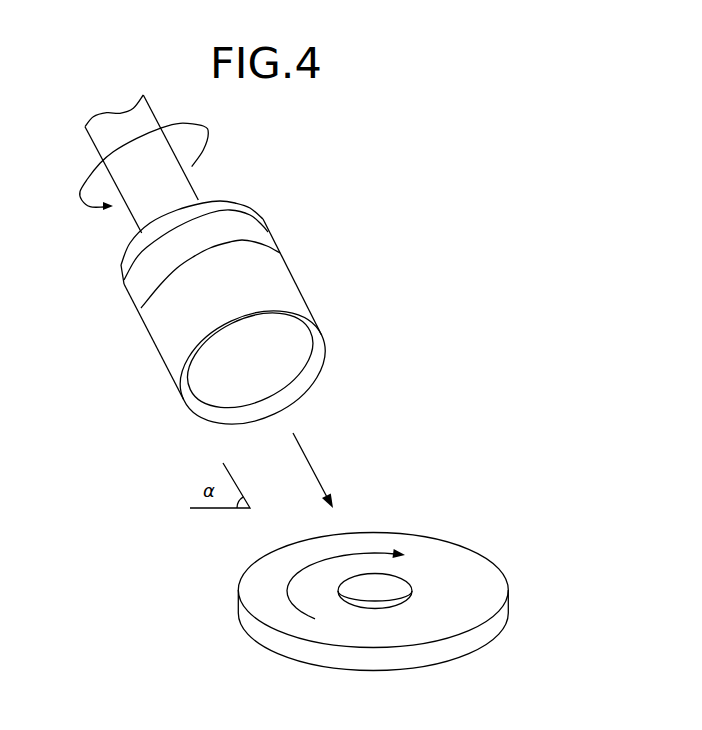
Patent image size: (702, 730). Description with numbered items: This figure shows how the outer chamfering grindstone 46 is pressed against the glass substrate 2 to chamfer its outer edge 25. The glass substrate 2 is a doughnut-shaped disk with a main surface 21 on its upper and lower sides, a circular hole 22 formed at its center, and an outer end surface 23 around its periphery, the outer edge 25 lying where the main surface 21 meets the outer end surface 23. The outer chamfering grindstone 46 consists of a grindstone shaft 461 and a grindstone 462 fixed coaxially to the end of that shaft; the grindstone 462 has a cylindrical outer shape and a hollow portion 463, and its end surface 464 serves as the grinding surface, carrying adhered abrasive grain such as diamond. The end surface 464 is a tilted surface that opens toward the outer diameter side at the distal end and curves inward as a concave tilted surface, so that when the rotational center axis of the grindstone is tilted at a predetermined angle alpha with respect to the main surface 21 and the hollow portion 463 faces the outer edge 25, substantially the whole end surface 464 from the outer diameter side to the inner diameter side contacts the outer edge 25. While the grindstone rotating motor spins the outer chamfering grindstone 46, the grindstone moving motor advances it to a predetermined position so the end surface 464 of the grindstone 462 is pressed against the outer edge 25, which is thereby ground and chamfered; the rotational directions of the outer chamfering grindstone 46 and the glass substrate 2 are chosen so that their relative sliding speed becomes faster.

The outer chamfering grindstone 46 is at (368, 175).
The grindstone shaft 461 is at (190, 179).
The grindstone 462 is at (289, 265).
The hollow portion 463 is at (213, 380).
The end surface 464 is at (317, 350).
The glass substrate 2 is at (494, 514).
The main surface 21 is at (460, 560).
The circular hole 22 is at (388, 598).
The outer end surface 23 is at (315, 652).
The outer edge 25 is at (370, 647).